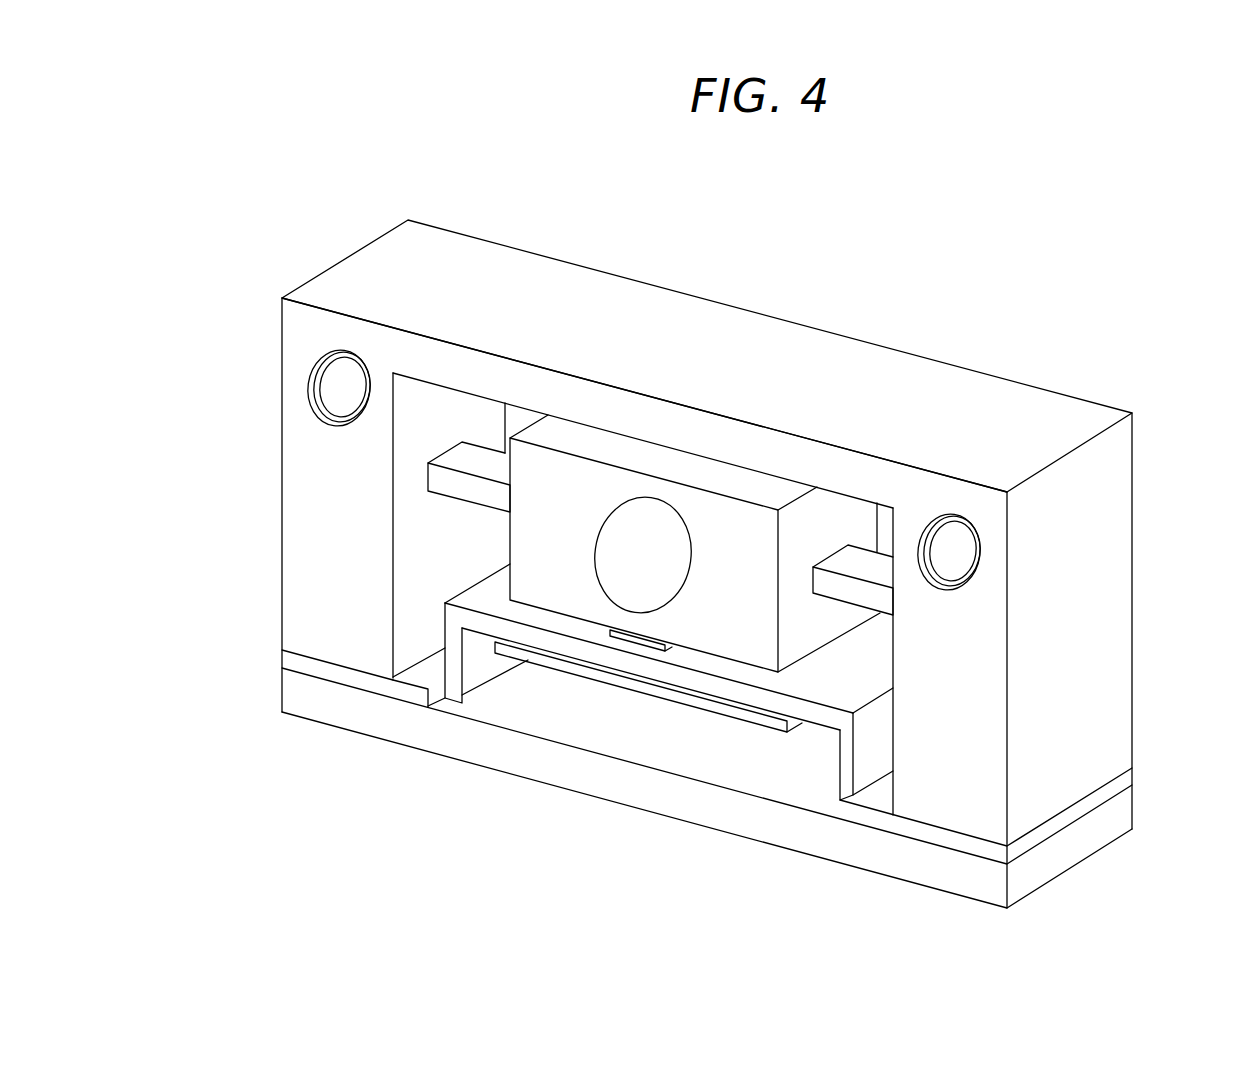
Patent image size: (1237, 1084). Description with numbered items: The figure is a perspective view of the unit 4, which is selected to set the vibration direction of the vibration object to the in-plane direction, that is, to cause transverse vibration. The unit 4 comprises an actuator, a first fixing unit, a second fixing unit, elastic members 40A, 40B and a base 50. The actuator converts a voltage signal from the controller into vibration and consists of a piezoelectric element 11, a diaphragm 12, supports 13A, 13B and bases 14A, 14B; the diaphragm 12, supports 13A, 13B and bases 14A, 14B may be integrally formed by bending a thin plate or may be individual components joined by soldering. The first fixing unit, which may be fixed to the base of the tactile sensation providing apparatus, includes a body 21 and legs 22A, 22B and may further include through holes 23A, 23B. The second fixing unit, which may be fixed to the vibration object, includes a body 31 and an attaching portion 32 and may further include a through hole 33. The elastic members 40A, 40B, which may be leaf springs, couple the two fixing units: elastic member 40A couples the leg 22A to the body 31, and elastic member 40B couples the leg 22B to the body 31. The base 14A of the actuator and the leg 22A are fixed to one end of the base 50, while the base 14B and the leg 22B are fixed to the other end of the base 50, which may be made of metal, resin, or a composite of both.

The unit 4 is at (1033, 322).
The piezoelectric element 11 is at (557, 660).
The diaphragm 12 is at (482, 585).
The support 13A is at (455, 668).
The support 13B is at (843, 765).
The base 14A is at (355, 683).
The base 14B is at (918, 832).
The body 21 is at (630, 408).
The leg 22A is at (313, 561).
The leg 22B is at (962, 688).
The through hole 23A is at (338, 386).
The through hole 23B is at (952, 548).
The body 31 is at (723, 612).
The attaching portion 32 is at (636, 648).
The through hole 33 is at (700, 487).
The elastic member 40A is at (462, 455).
The elastic member 40B is at (850, 553).
The base 50 is at (298, 692).